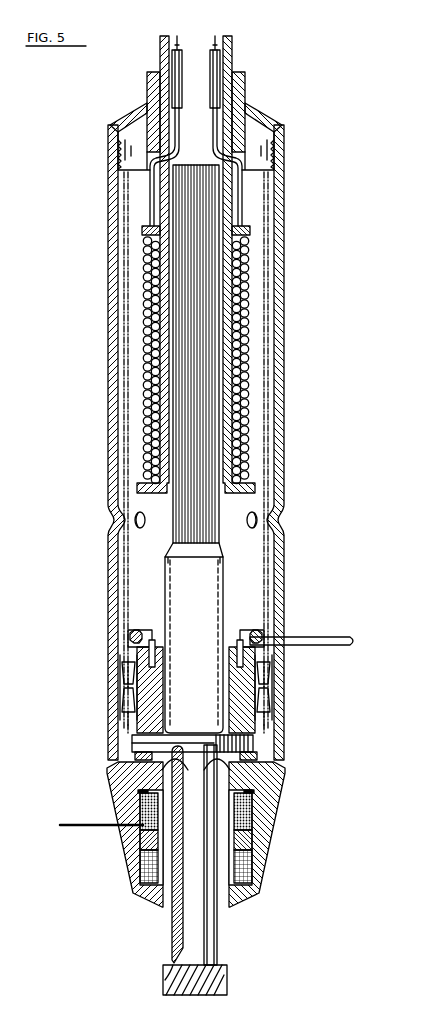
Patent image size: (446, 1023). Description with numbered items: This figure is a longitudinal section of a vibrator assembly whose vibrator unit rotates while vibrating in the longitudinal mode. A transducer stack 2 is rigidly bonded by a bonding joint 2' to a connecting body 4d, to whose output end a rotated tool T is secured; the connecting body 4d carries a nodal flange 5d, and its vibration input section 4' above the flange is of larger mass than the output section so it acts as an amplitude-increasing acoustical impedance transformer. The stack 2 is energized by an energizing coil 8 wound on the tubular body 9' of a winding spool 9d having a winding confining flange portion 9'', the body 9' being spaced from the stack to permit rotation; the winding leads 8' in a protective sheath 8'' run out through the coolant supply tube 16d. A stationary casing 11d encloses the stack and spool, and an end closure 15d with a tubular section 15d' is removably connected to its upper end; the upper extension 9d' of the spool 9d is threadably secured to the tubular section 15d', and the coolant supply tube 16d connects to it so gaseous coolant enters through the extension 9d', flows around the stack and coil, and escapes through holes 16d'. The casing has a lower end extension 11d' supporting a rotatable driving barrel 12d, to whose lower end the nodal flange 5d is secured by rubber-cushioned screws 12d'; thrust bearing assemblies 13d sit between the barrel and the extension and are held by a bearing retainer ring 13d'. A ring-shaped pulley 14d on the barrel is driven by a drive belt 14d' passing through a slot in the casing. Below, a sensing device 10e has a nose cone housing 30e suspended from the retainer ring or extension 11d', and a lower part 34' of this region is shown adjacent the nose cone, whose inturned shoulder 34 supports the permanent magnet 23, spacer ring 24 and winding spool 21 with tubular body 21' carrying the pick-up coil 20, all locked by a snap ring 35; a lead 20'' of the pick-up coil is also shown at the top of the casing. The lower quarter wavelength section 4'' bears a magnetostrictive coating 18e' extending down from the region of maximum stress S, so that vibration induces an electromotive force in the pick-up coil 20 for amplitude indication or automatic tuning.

The transducer stack 2 is at (244, 354).
The bonding joint 2' is at (242, 550).
The vibration input section 4' is at (194, 645).
The lower quarter wavelength section 4'' is at (192, 855).
The connecting body 4d is at (220, 926).
The nodal flange 5d is at (188, 745).
The energizing coil 8 is at (226, 360).
The winding leads 8' is at (180, 125).
The protective sheath 8'' is at (240, 72).
The tubular body 9' is at (190, 360).
The winding confining flange portion 9'' is at (189, 365).
The winding spool 9d is at (187, 264).
The upper extension 9d' is at (103, 118).
The sensing device 10e is at (120, 875).
The stationary casing 11d is at (219, 442).
The lower end extension 11d' is at (307, 700).
The rotatable driving barrel 12d is at (161, 686).
The screws 12d' is at (153, 762).
The thrust bearing assemblies 13d is at (190, 695).
The bearing retainer ring 13d' is at (283, 743).
The ring-shaped pulley 14d is at (186, 615).
The drive belt 14d' is at (201, 626).
The end closure 15d is at (179, 121).
The tubular section 15d' is at (267, 112).
The coolant supply tube 16d is at (257, 68).
The holes 16d' is at (195, 520).
The magnetostrictive coating 18e' is at (139, 854).
The pick-up coil 20 is at (193, 806).
The electrode 20'' is at (144, 72).
The winding spool 21 is at (292, 812).
The tubular body 21' is at (275, 829).
The permanent magnet 23 is at (248, 870).
The spacer ring 24 is at (255, 845).
The nose cone housing 30e is at (118, 840).
The inturned shoulder 34 is at (262, 896).
The nut 34' is at (223, 776).
The snap ring 35 is at (258, 792).
The region of maximum stress S is at (197, 776).
The rotated tool T is at (230, 977).